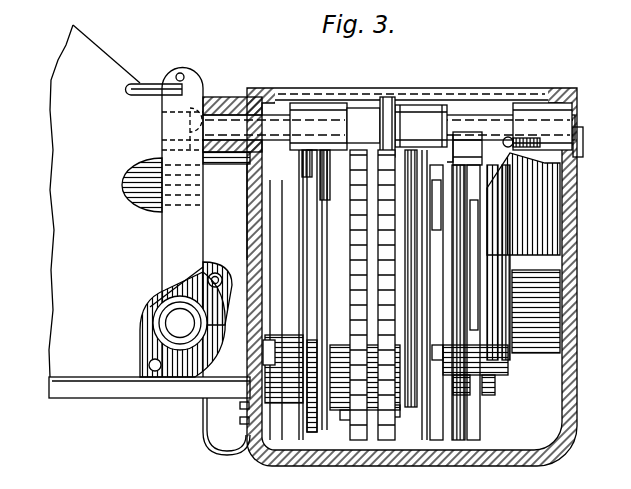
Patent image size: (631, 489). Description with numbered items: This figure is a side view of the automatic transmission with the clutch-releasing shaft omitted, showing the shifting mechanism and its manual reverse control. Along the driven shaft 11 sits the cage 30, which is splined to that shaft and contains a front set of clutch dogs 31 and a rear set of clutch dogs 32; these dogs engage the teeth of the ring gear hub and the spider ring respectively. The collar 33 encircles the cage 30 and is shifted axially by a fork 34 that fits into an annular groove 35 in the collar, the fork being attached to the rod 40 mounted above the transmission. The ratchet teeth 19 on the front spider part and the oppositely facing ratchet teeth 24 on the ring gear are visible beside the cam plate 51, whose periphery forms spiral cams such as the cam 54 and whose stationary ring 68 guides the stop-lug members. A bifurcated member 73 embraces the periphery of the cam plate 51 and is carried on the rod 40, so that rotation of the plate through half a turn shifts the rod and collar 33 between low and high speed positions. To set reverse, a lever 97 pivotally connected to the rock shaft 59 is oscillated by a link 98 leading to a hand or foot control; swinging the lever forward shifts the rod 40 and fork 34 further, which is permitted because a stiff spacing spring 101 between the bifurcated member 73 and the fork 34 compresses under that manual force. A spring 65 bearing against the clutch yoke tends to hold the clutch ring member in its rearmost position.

The driven shaft 11 is at (410, 396).
The ratchet teeth 19 is at (355, 231).
The ratchet teeth 24 is at (393, 408).
The cage 30 is at (512, 346).
The clutch dogs 31 is at (440, 235).
The clutch dogs 32 is at (460, 178).
The collar 33 is at (488, 390).
The fork 34 is at (470, 263).
The annular groove 35 is at (470, 392).
The rod 40 is at (278, 122).
The cam plate 51 is at (312, 218).
The cam 54 is at (310, 432).
The rock shaft 59 is at (180, 322).
The spring 65 is at (205, 415).
The stationary ring 68 is at (283, 400).
The bifurcated member 73 is at (302, 170).
The lever 97 is at (165, 256).
The link 98 is at (138, 92).
The spacing spring 101 is at (404, 100).